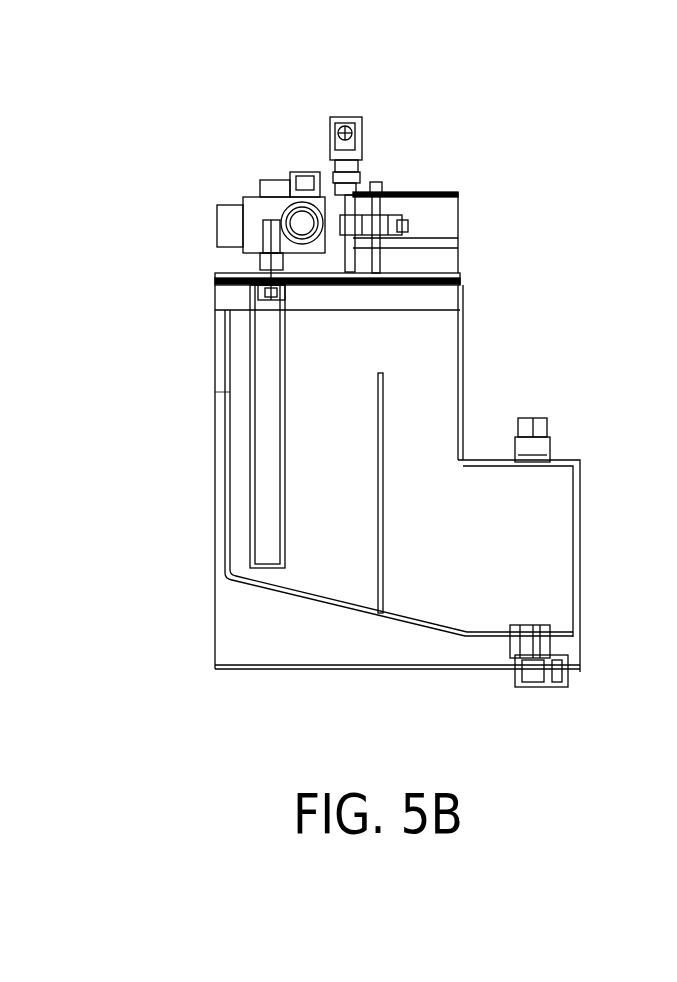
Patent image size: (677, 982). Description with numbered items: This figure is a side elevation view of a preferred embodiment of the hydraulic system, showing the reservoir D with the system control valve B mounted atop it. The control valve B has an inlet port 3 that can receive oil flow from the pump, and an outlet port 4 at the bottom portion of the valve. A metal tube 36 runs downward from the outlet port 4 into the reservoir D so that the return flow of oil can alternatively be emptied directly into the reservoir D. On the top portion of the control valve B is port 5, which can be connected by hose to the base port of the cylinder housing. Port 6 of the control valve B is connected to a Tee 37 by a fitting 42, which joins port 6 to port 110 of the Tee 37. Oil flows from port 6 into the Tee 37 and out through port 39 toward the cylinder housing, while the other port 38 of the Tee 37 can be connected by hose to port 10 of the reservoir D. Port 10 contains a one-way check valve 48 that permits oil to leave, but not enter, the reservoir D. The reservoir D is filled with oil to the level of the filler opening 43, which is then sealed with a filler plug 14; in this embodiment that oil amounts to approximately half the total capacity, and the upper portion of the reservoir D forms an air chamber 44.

The inlet port 3 is at (300, 223).
The outlet port 4 is at (250, 258).
The port 5 is at (277, 182).
The port 6 is at (355, 173).
The port 10 is at (575, 673).
The filler plug 14 is at (548, 445).
The metal tube 36 is at (267, 490).
The Tee 37 is at (352, 117).
The port 38 is at (443, 116).
The port 39 is at (346, 177).
The fitting 42 is at (353, 168).
The filler opening 43 is at (530, 467).
The air chamber 44 is at (410, 372).
The one-way check valve 48 is at (560, 674).
The port 110 is at (355, 165).
The control valve B is at (303, 153).
The reservoir D is at (215, 392).